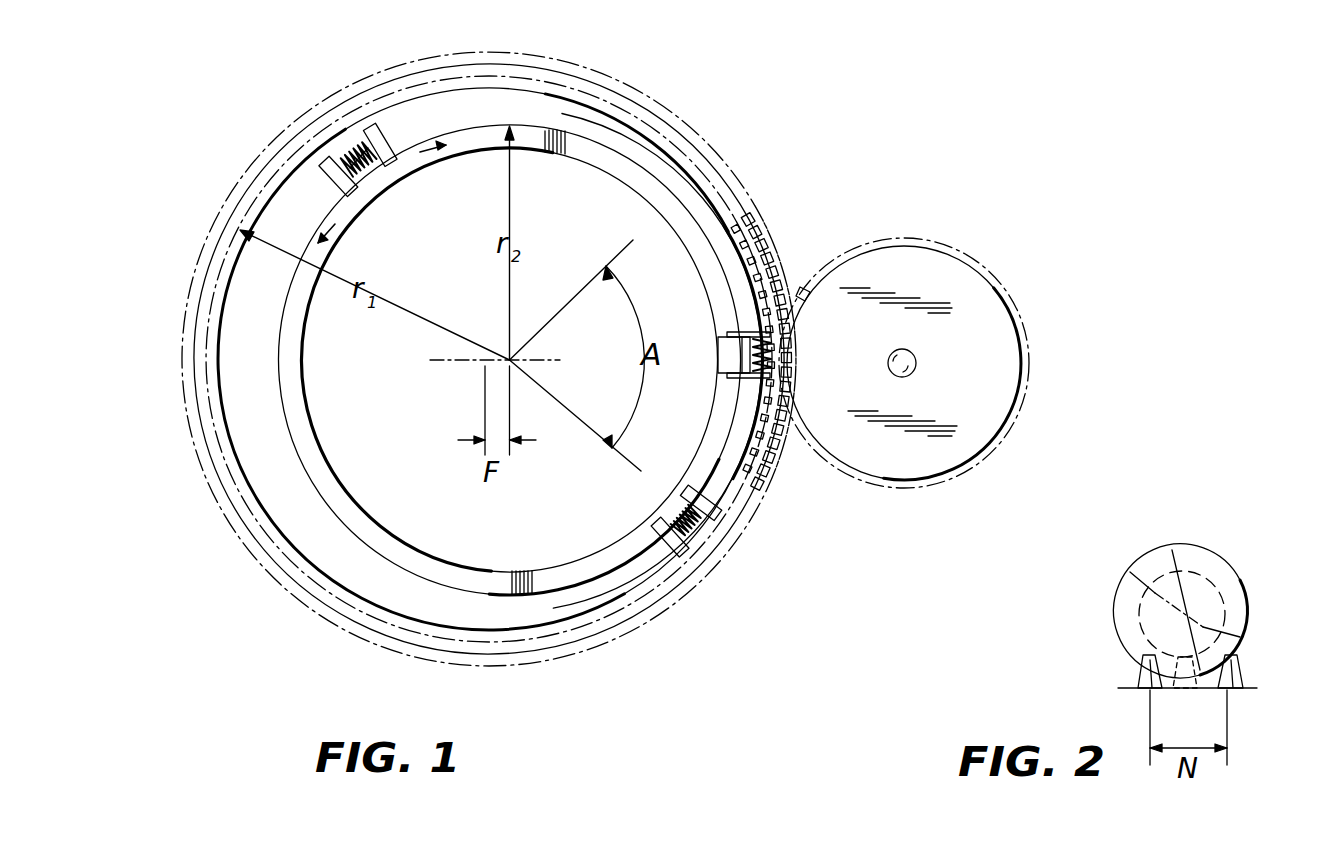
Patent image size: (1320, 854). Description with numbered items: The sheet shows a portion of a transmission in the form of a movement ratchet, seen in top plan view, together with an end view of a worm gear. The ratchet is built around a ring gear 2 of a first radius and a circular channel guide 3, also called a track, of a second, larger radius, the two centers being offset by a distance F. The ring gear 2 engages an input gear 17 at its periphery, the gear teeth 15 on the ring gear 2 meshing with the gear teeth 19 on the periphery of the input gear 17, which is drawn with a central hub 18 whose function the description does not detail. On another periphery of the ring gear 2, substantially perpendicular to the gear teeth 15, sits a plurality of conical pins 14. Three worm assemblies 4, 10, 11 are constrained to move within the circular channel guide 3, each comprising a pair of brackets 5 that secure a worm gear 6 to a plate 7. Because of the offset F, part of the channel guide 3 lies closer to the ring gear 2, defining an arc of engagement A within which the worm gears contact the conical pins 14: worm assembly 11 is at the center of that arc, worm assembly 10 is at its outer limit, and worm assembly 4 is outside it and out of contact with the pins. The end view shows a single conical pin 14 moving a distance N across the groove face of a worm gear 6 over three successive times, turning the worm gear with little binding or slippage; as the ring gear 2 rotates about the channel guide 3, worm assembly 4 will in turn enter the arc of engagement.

In FIG. 1, the ring gear 2 is at (744, 222).
In FIG. 1, the circular channel guide 3 is at (585, 150).
In FIG. 1, the worm assembly 4 is at (402, 128).
In FIG. 1, the brackets 5 is at (333, 177).
In FIG. 1, the worm gear 6 is at (345, 175).
In FIG. 2, the worm gear 6 is at (1210, 568).
In FIG. 1, the plate 7 is at (380, 166).
In FIG. 1, the worm assembly 10 is at (663, 550).
In FIG. 1, the worm assembly 11 is at (738, 326).
In FIG. 1, the conical pins 14 is at (745, 262).
In FIG. 2, the conical pins 14 is at (1142, 668).
In FIG. 1, the gear teeth 15 is at (766, 463).
In FIG. 1, the input gear 17 is at (976, 304).
In FIG. 1, the shaft 18 is at (912, 371).
In FIG. 1, the gear teeth 19 is at (803, 288).